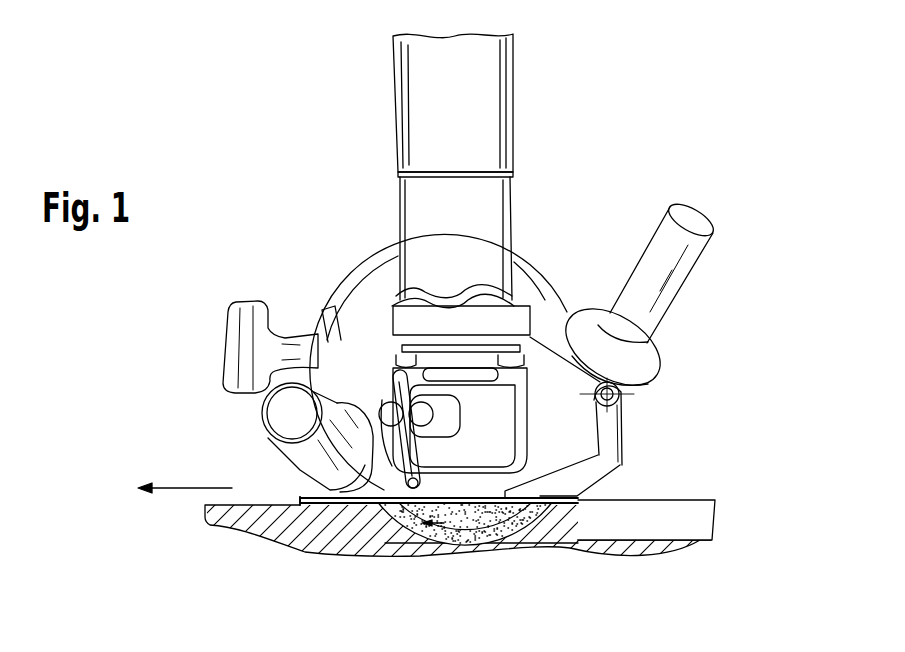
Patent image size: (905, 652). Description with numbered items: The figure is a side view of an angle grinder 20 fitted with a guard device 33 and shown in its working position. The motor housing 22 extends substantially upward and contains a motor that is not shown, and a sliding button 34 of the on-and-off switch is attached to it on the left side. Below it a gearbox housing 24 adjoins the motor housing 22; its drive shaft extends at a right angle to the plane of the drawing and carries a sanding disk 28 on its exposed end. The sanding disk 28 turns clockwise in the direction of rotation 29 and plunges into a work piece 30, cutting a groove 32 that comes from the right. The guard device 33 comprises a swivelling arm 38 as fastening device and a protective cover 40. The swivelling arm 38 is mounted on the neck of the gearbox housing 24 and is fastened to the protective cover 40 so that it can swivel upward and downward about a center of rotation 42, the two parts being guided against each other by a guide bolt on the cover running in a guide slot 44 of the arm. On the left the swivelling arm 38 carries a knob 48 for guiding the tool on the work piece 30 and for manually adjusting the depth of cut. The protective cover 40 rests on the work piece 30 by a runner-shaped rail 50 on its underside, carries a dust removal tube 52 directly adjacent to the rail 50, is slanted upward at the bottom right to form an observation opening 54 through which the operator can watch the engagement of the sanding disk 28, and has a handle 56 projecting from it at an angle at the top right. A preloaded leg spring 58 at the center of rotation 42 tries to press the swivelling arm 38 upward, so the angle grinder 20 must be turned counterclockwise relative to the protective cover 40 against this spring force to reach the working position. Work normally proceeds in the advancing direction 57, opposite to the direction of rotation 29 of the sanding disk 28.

The angle grinder 20 is at (538, 67).
The motor housing 22 is at (482, 114).
The gearbox housing 24 is at (500, 418).
The sanding disk 28 is at (527, 506).
The direction of rotation 29 is at (480, 527).
The work piece 30 is at (356, 533).
The groove 32 is at (680, 514).
The guard device 33 is at (525, 254).
The sliding button 34 is at (378, 298).
The swivelling arm 38 is at (343, 366).
The protective cover 40 is at (540, 303).
The center of rotation 42 is at (628, 404).
The guide slot 44 is at (398, 493).
The knob 48 is at (243, 340).
The rail 50 is at (322, 520).
The dust removal tube 52 is at (268, 418).
The observation opening 54 is at (609, 489).
The handle 56 is at (695, 218).
The advancing direction 57 is at (184, 487).
The leg spring 58 is at (620, 426).